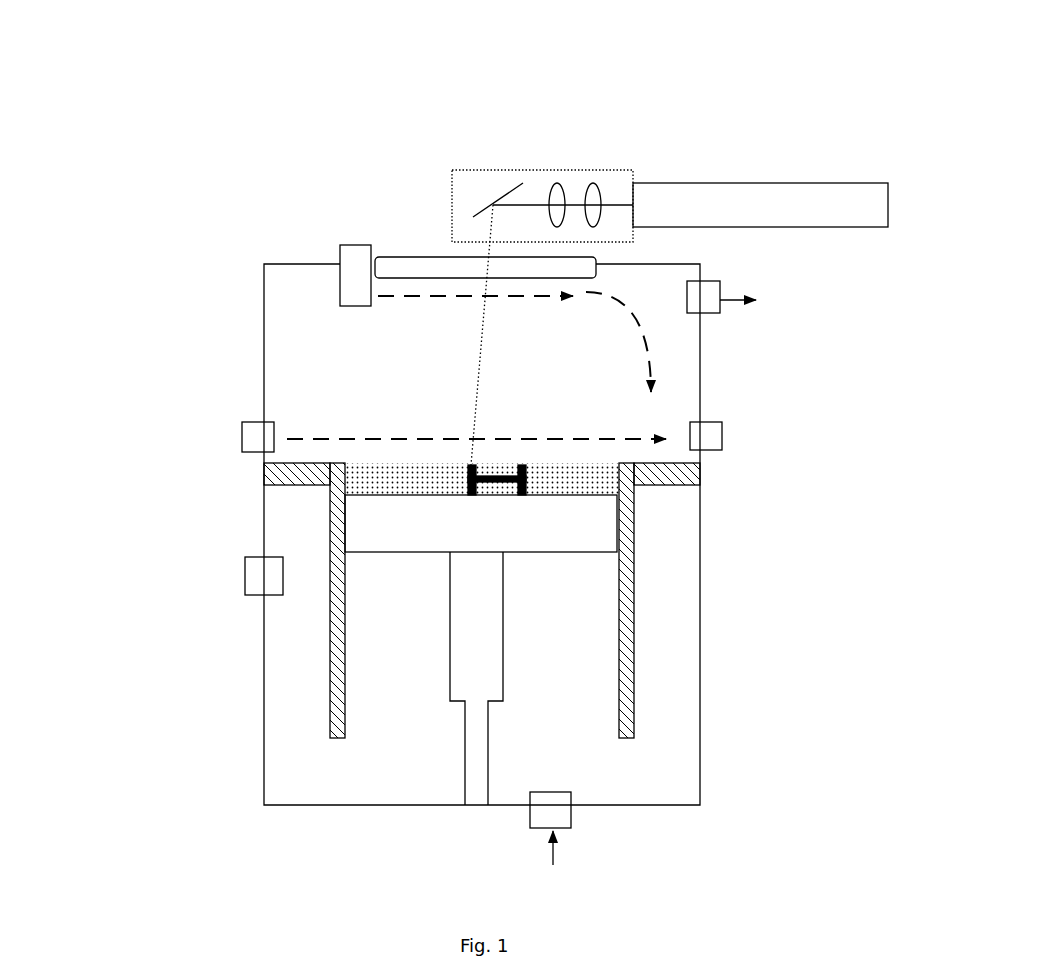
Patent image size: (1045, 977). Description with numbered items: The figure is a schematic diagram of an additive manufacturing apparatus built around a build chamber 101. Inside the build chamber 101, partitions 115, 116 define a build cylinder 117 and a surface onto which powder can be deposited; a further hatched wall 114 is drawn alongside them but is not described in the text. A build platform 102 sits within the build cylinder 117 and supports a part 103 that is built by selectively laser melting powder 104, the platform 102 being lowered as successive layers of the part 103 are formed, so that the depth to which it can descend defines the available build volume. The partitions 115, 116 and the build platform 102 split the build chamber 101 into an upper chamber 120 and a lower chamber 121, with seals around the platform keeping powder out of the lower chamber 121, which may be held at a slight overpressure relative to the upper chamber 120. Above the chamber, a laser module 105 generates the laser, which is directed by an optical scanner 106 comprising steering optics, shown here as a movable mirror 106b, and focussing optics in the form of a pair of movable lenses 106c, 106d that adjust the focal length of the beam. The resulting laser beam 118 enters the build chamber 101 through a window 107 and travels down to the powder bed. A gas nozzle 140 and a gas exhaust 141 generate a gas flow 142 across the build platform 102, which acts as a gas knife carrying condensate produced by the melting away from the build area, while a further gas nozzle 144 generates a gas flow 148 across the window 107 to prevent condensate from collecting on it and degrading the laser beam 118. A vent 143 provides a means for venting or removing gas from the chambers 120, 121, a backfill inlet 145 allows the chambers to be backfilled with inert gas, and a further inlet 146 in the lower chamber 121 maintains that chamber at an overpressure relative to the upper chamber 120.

The build chamber 101 is at (262, 352).
The build platform 102 is at (552, 522).
The part 103 is at (472, 497).
The powder 104 is at (543, 493).
The laser module 105 is at (768, 181).
The optical scanner 106 is at (584, 130).
The movable mirror 106b is at (481, 193).
The movable lens 106c is at (556, 168).
The movable lens 106d is at (600, 168).
The window 107 is at (472, 262).
The right inner wall 114 is at (624, 669).
The partition 115 is at (699, 477).
The partition 116 is at (343, 656).
The build cylinder 117 is at (352, 488).
The laser beam 118 is at (471, 382).
The upper chamber 120 is at (545, 416).
The lower chamber 121 is at (407, 691).
The gas nozzle 140 is at (240, 420).
The gas exhaust 141 is at (723, 417).
The gas flow 142 is at (350, 428).
The vent 143 is at (722, 287).
The further gas nozzle 144 is at (346, 246).
The backfill inlet 145 is at (573, 823).
The further inlet 146 is at (243, 565).
The gas flow 148 is at (518, 312).